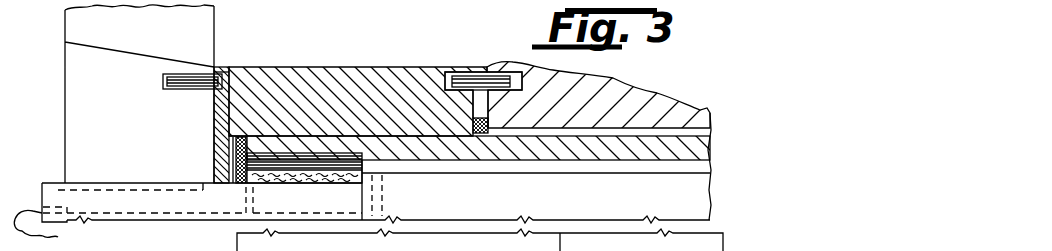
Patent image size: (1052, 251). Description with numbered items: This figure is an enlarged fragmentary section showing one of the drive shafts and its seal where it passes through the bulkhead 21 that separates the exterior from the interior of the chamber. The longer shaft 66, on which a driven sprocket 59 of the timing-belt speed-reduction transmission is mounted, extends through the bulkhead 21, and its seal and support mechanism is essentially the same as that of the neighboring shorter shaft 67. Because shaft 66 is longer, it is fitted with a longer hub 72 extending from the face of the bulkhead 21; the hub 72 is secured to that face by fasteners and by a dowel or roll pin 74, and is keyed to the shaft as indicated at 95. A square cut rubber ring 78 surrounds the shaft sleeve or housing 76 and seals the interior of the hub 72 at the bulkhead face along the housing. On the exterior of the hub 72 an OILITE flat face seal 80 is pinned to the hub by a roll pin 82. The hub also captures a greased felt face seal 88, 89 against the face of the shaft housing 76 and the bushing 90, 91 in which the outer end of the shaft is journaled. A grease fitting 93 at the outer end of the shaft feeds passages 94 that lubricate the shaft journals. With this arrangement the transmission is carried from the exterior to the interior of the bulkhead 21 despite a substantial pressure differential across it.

The bulkhead 21 is at (627, 93).
The driven sprocket 59 is at (65, 108).
The shaft 66 is at (687, 193).
The shaft 67 is at (740, 250).
The hub 72 is at (363, 83).
The roll pin 74 is at (500, 72).
The shaft housing 76 is at (712, 143).
The square cut rubber ring 78 is at (490, 125).
The flat face seal 80 is at (214, 120).
The roll pin 82 is at (163, 80).
The greased felt face seal 88 is at (240, 183).
The greased felt face seal 89 is at (443, 250).
The bushing 90 is at (297, 172).
The bushing 91 is at (560, 247).
The grease fitting 93 is at (66, 183).
The passages 94 is at (132, 227).
The key 95 is at (103, 177).